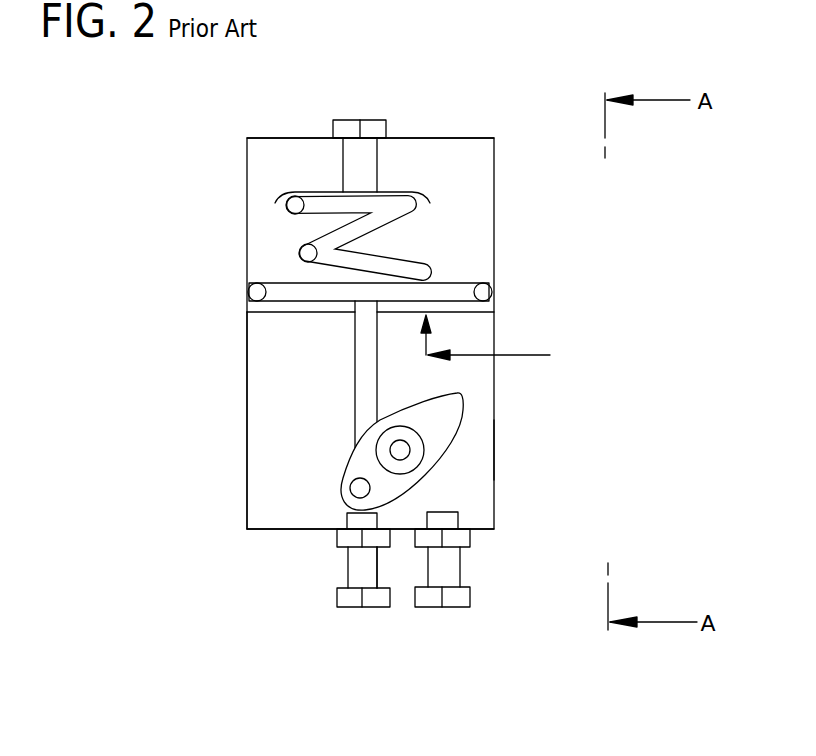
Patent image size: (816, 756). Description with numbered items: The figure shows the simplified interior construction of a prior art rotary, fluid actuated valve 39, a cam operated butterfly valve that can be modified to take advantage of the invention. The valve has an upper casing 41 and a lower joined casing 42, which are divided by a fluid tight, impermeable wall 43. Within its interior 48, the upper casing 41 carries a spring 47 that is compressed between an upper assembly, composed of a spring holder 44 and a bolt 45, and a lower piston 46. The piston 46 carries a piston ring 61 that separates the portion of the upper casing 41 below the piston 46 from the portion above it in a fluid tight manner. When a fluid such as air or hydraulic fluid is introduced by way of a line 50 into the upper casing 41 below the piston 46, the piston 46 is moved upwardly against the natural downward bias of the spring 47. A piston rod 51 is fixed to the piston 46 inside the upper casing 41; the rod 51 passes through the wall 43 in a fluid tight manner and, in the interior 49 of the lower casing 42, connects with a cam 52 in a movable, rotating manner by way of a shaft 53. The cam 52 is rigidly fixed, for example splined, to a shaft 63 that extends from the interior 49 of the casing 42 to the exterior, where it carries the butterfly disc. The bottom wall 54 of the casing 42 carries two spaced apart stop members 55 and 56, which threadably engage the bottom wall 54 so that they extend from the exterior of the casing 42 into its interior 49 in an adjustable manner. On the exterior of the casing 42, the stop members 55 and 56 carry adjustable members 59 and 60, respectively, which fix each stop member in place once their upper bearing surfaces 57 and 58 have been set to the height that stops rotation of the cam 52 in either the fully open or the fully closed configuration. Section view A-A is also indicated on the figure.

The rotary, fluid actuated valve 39 is at (182, 175).
The upper casing 41 is at (494, 212).
The lower joined casing 42 is at (495, 447).
The fluid tight wall 43 is at (290, 314).
The spring holder 44 is at (388, 188).
The bolt 45 is at (348, 122).
The piston 46 is at (292, 282).
The spring 47 is at (380, 233).
The interior 48 is at (277, 153).
The interior 49 is at (276, 447).
The line 50 is at (510, 355).
The piston rod 51 is at (356, 355).
The cam 52 is at (460, 405).
The shaft 53 is at (355, 485).
The bottom wall 54 is at (291, 530).
The stop member 55 is at (348, 565).
The stop member 56 is at (460, 563).
The upper bearing surface 57 is at (346, 513).
The upper bearing surface 58 is at (445, 505).
The adjustable member 59 is at (380, 552).
The adjustable member 60 is at (470, 536).
The piston ring 61 is at (249, 292).
The shaft 63 is at (402, 453).